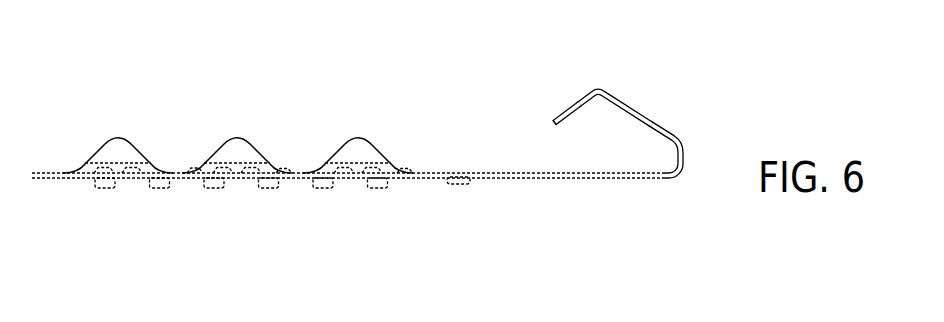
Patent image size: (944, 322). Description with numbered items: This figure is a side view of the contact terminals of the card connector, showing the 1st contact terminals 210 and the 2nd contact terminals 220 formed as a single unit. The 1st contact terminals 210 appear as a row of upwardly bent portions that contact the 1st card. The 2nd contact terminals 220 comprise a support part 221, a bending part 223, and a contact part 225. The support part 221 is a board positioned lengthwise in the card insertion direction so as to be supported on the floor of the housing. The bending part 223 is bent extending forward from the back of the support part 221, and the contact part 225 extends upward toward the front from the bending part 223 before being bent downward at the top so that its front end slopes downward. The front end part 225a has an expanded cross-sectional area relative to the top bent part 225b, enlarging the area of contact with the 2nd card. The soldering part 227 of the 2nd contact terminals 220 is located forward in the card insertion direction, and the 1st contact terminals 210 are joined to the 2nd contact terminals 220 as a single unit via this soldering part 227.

The 1st contact terminal 210 is at (146, 139).
The 2nd contact terminal 220 is at (357, 167).
The support part 221 is at (517, 178).
The bending part 223 is at (683, 162).
The contact part 225 is at (600, 134).
The front end part 225a is at (552, 120).
The top bent part 225b is at (597, 90).
The soldering part 227 is at (427, 179).